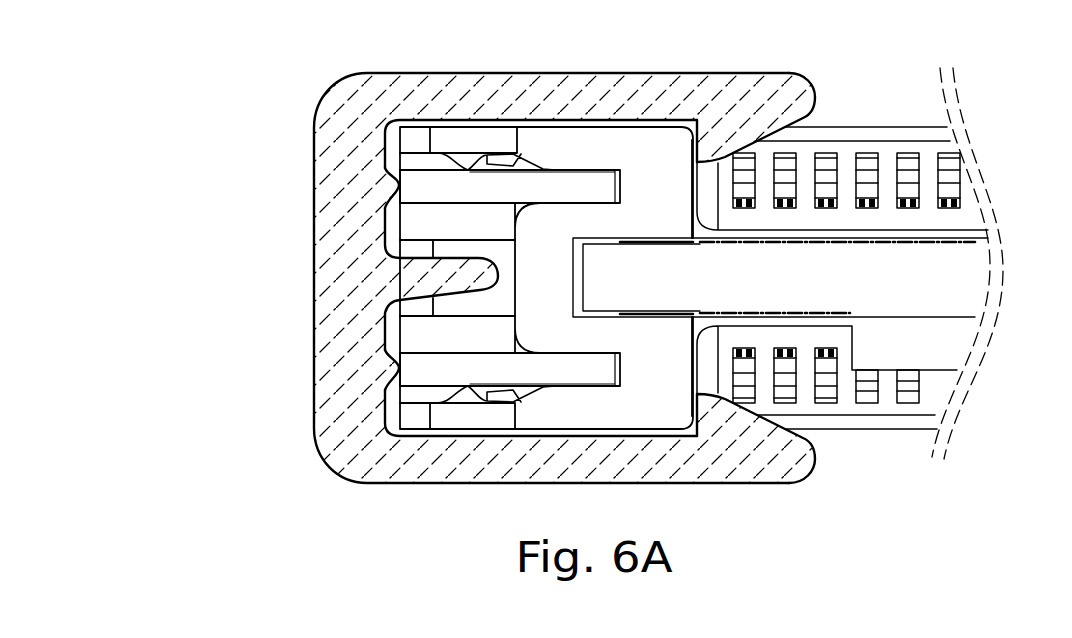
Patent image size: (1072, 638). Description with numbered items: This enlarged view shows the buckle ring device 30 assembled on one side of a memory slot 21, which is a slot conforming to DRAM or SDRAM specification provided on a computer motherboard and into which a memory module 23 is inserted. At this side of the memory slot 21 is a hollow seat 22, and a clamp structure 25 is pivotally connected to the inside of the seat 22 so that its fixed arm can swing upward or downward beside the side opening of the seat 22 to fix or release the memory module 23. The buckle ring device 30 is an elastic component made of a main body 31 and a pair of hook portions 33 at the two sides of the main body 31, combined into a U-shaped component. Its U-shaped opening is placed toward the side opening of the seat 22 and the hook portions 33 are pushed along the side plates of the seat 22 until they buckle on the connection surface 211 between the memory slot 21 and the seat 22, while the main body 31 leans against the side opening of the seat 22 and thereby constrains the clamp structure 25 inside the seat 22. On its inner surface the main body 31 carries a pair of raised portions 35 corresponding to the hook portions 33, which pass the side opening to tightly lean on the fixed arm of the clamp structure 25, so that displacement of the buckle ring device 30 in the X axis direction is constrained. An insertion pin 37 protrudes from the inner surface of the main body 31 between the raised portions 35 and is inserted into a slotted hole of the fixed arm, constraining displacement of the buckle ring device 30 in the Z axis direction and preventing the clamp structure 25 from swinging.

The memory slot 21 is at (890, 420).
The connection surface 211 is at (693, 367).
The seat 22 is at (546, 226).
The memory module 23 is at (947, 282).
The clamp structure 25 is at (495, 185).
The buckle ring device 30 is at (508, 276).
The main body 31 is at (345, 255).
The hook portions 33 is at (738, 95).
The raised portions 35 is at (396, 185).
The insertion pin 37 is at (483, 285).